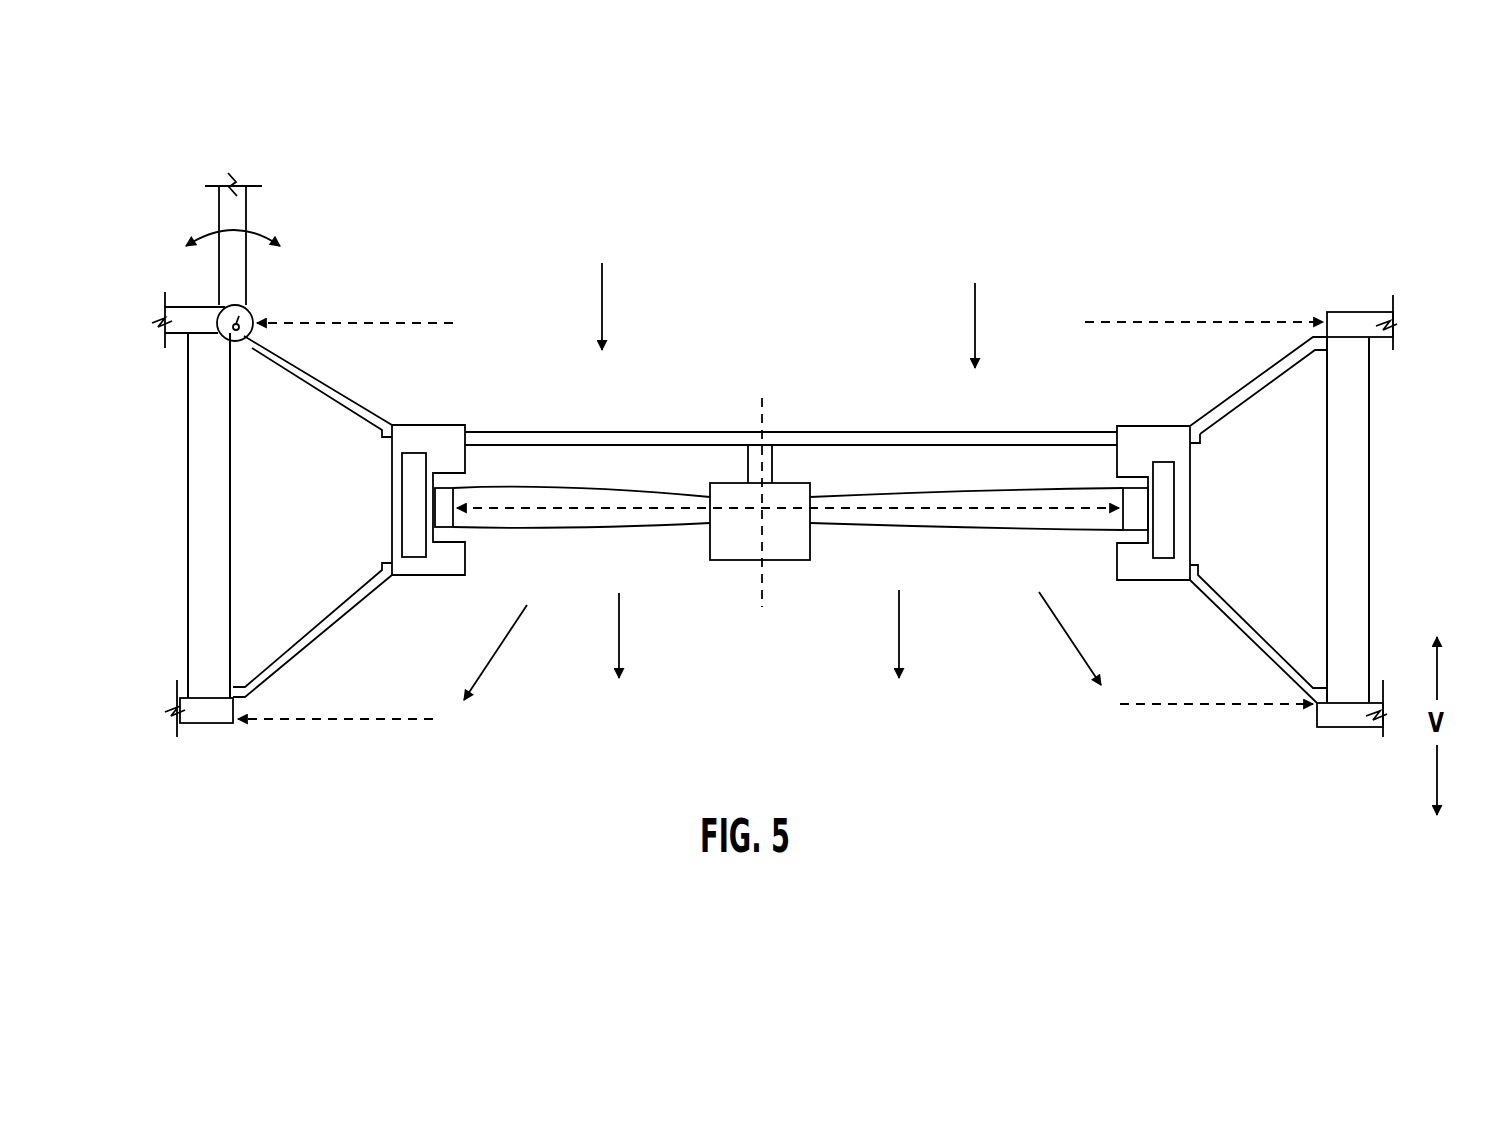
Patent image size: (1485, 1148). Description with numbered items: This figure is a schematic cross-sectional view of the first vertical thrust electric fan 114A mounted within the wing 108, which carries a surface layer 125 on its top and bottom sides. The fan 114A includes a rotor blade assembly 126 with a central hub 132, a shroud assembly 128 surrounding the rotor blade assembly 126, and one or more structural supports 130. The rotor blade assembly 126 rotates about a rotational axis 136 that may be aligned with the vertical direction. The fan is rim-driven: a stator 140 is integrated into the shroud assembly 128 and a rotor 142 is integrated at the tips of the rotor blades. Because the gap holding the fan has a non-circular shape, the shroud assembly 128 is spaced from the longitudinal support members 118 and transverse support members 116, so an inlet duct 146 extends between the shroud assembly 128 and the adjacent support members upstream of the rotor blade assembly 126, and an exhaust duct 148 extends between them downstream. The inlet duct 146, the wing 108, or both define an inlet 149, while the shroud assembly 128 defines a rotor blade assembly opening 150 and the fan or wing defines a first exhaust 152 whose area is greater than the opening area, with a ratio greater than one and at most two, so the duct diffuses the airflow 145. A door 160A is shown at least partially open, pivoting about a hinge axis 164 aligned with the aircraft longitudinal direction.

The wing 108 is at (1401, 197).
The first vertical thrust electric fan 114A is at (1104, 207).
The transverse support members 116 is at (188, 530).
The longitudinal support members 118 is at (774, 518).
The surface layer 125 is at (200, 721).
The rotor blade assembly 126 is at (990, 684).
The shroud assembly 128 is at (413, 433).
The structural supports 130 is at (609, 440).
The hub 132 is at (727, 561).
The rotational axis 136 is at (766, 424).
The stator 140 is at (420, 546).
The rotor 142 is at (445, 497).
The airflow 145 is at (602, 302).
The inlet duct 146 is at (308, 378).
The exhaust duct 148 is at (298, 655).
The inlet 149 is at (1288, 318).
The rotor blade assembly opening 150 is at (1008, 512).
The first exhaust 152 is at (1220, 707).
The steering column 160A is at (241, 209).
The hinge axis 164 is at (219, 304).